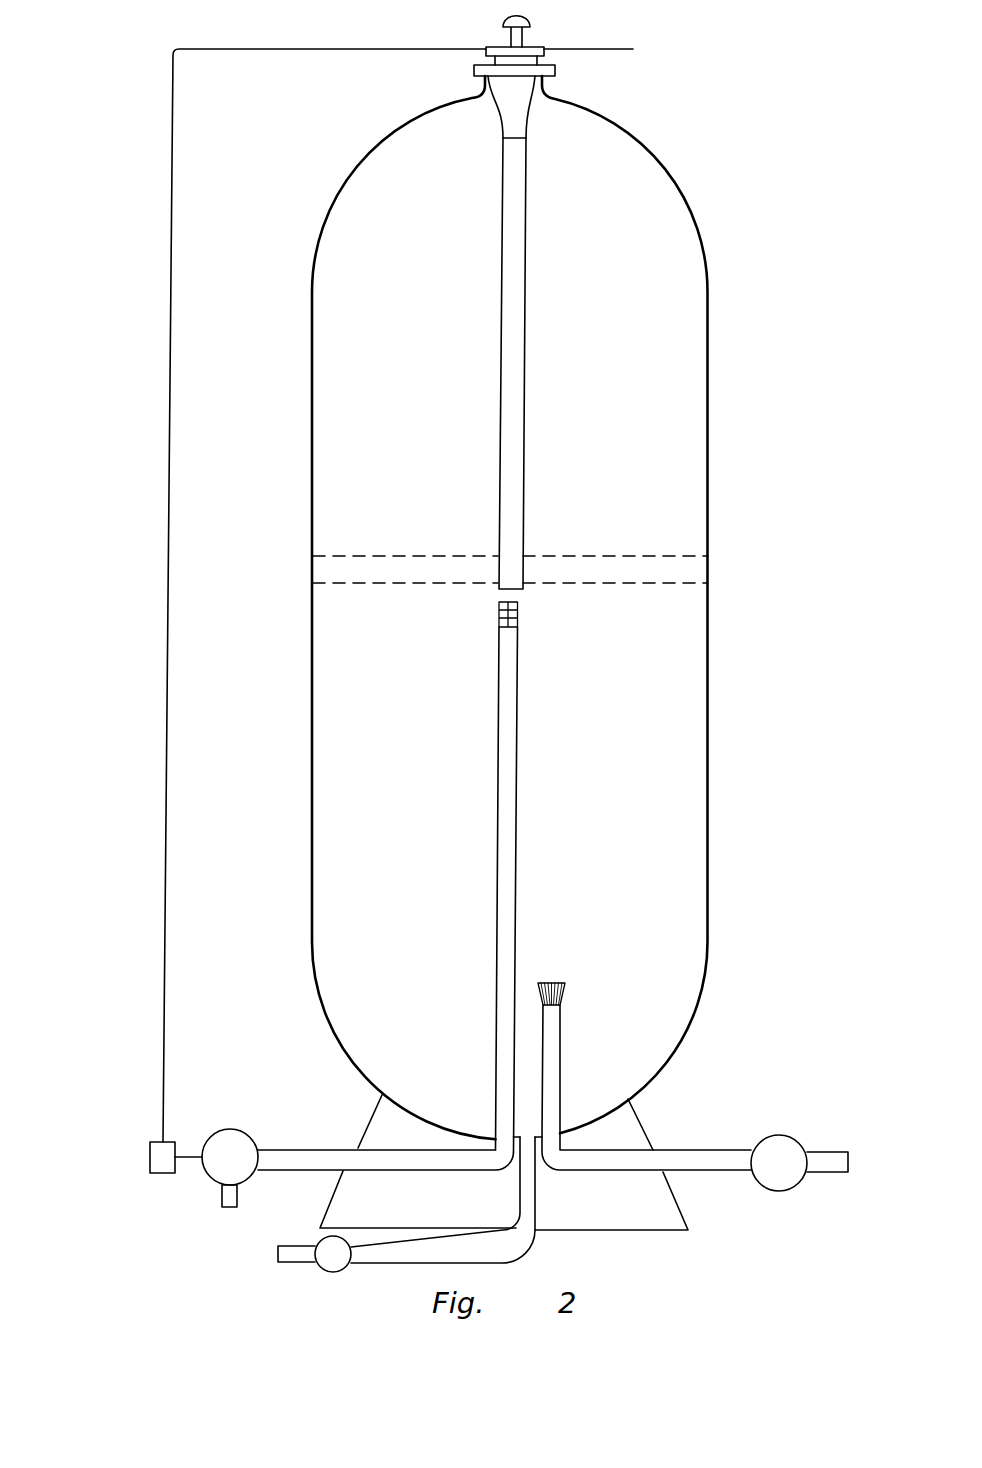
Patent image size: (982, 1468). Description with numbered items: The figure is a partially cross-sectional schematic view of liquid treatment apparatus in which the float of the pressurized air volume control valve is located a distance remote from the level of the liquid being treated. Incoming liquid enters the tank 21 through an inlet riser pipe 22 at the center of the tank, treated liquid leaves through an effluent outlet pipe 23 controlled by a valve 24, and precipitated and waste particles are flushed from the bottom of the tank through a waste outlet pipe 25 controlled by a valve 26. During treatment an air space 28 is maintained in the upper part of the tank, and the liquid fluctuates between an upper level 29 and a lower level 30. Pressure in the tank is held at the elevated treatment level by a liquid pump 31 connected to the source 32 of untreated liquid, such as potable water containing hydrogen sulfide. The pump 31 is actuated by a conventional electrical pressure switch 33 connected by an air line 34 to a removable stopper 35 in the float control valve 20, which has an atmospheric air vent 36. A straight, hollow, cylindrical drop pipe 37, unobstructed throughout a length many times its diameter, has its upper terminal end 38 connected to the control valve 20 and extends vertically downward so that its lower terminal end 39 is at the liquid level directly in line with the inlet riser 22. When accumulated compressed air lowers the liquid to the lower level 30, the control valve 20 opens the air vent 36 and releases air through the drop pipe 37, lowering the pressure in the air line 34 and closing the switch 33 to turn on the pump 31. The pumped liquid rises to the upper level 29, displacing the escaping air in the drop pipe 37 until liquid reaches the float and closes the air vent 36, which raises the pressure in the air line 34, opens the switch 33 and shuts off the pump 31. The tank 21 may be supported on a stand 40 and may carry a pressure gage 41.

The float control valve 20 is at (571, 75).
The tank 21 is at (708, 380).
The inlet riser pipe 22 is at (503, 762).
The effluent outlet pipe 23 is at (825, 1152).
The valve 24 is at (792, 1191).
The waste outlet pipe 25 is at (292, 1262).
The valve 26 is at (337, 1272).
The air space 28 is at (438, 390).
The upper level 29 is at (653, 557).
The lower level 30 is at (648, 584).
The liquid pump 31 is at (232, 1129).
The source of untreated liquid 32 is at (222, 1207).
The electrical pressure switch 33 is at (150, 1146).
The air line 34 is at (173, 152).
The removable stopper 35 is at (495, 48).
The atmospheric air vent 36 is at (549, 47).
The drop pipe 37 is at (523, 360).
The upper terminal end 38 is at (530, 130).
The lower terminal end 39 is at (523, 589).
The stand 40 is at (647, 1128).
The pressure gage 41 is at (503, 18).